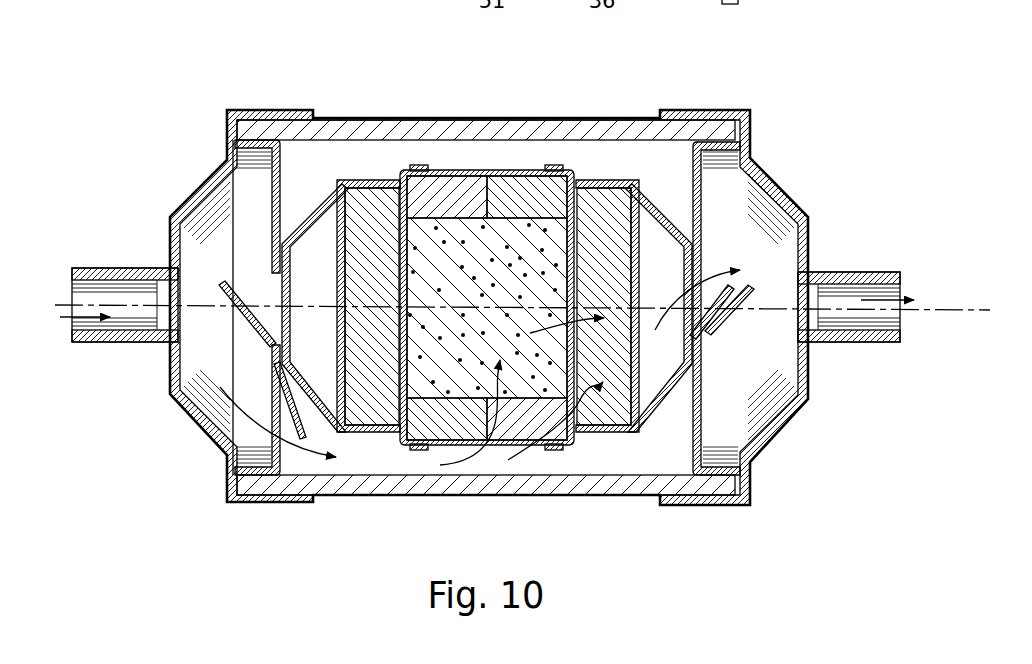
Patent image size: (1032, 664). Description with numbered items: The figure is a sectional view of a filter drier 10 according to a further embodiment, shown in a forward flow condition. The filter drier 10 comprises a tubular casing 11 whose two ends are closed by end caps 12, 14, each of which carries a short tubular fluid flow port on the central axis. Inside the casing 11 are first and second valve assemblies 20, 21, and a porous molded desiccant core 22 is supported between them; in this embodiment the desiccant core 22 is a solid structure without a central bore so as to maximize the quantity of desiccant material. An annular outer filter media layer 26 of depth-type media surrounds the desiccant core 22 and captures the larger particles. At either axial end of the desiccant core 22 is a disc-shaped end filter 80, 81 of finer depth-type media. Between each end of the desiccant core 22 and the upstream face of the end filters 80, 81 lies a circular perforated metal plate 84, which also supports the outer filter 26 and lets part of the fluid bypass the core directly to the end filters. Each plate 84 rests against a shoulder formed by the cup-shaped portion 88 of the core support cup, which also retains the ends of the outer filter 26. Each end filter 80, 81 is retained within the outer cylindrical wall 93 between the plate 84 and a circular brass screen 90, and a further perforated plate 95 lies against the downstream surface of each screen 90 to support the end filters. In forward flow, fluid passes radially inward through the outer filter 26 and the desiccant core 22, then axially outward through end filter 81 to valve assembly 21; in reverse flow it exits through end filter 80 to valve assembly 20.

The filter drier 10 is at (258, 60).
The tubular casing 11 is at (366, 120).
The end cap 12 is at (192, 187).
The end cap 14 is at (772, 177).
The first valve assembly 20 is at (288, 456).
The second valve assembly 21 is at (661, 448).
The desiccant core 22 is at (501, 248).
The outer filter media layer 26 is at (459, 187).
The end filter 80 is at (364, 415).
The end filter 81 is at (597, 415).
The perforated metal plate 84 is at (381, 187).
The cup-shaped portion 88 is at (417, 451).
The brass screen 90 is at (335, 265).
The outer cylindrical wall 93 is at (350, 176).
The perforated metal plate 95 is at (348, 350).